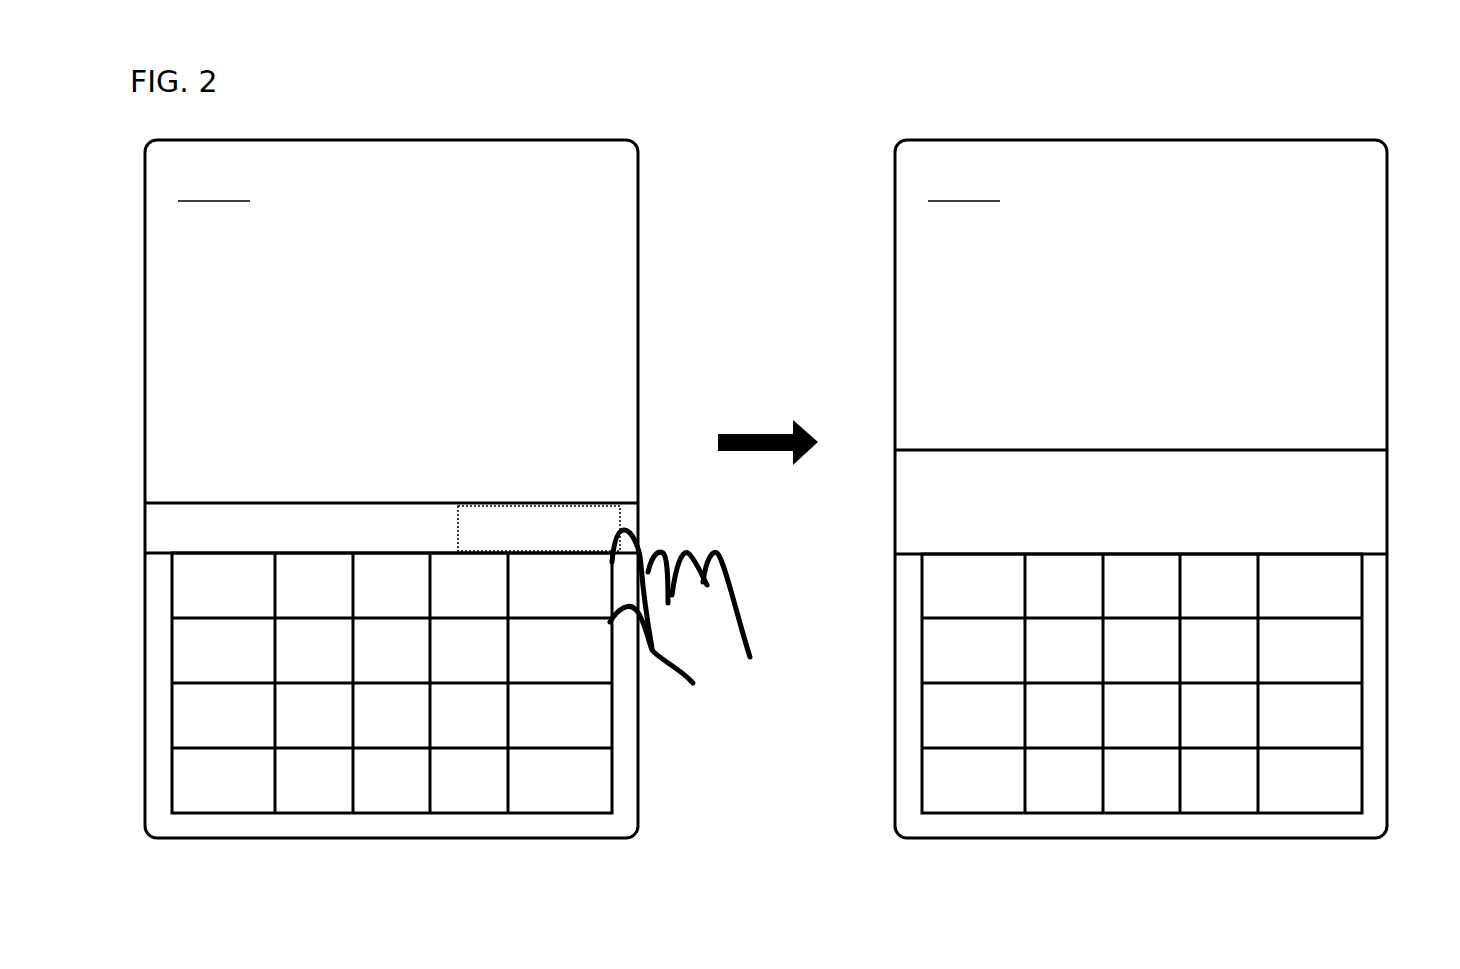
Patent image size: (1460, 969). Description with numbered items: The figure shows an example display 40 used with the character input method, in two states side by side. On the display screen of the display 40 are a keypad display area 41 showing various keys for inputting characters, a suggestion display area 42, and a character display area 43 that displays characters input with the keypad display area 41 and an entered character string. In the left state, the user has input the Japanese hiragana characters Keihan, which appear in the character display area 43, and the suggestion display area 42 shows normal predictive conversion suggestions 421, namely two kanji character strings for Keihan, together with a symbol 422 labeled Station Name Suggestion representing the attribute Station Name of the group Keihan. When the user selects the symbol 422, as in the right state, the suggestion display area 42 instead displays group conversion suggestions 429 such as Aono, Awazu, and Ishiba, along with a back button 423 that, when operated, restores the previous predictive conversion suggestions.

The display 40 is at (628, 121).
The keypad display area 41 is at (533, 786).
The suggestion display area 42 is at (146, 506).
The character display area 43 is at (604, 219).
The normal predictive conversion suggestions 421 is at (248, 544).
The symbol 422 is at (618, 501).
The back button 423 is at (1382, 506).
The group conversion suggestions 429 is at (896, 499).